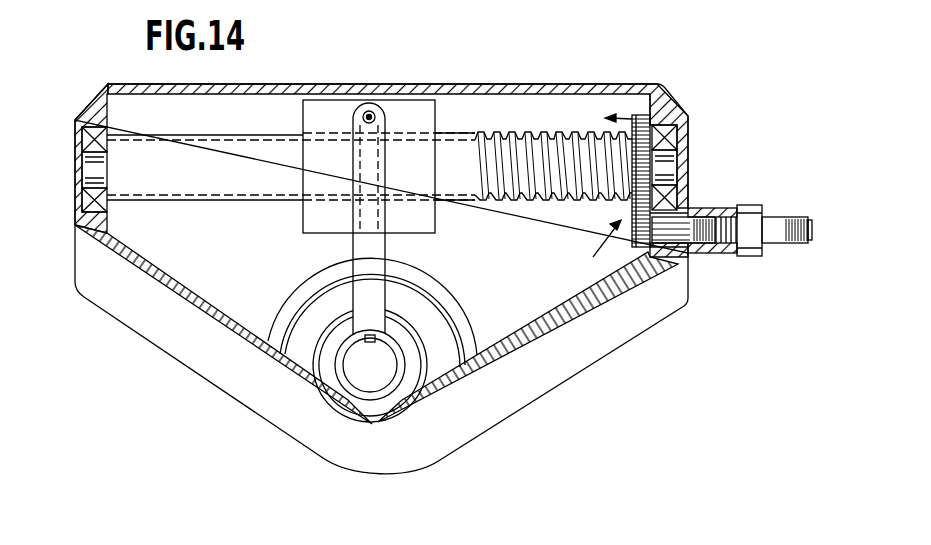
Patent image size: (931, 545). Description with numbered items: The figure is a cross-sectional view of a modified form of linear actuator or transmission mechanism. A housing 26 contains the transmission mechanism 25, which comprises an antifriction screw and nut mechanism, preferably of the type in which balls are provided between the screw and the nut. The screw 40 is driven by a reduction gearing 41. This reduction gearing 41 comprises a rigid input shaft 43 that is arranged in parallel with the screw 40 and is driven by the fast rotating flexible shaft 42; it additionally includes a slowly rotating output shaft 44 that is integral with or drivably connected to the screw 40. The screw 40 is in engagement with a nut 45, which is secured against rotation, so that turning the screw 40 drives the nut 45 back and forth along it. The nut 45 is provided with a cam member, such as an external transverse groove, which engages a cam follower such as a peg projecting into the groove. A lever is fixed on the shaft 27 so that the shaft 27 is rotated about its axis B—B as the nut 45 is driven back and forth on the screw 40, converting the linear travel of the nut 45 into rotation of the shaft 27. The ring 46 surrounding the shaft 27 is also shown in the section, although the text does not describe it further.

The nut 45 is at (577, 84).
The housing 26 is at (417, 108).
The transmission mechanism 25 is at (655, 123).
The output shaft 44 is at (667, 163).
The flexible shaft 42 is at (797, 220).
The input shaft 43 is at (688, 268).
The reduction gearing 41 is at (648, 250).
The screw 40 is at (445, 183).
The shaft 27 is at (385, 375).
The eccentric ring 46 is at (398, 328).
The axis B— B is at (368, 363).